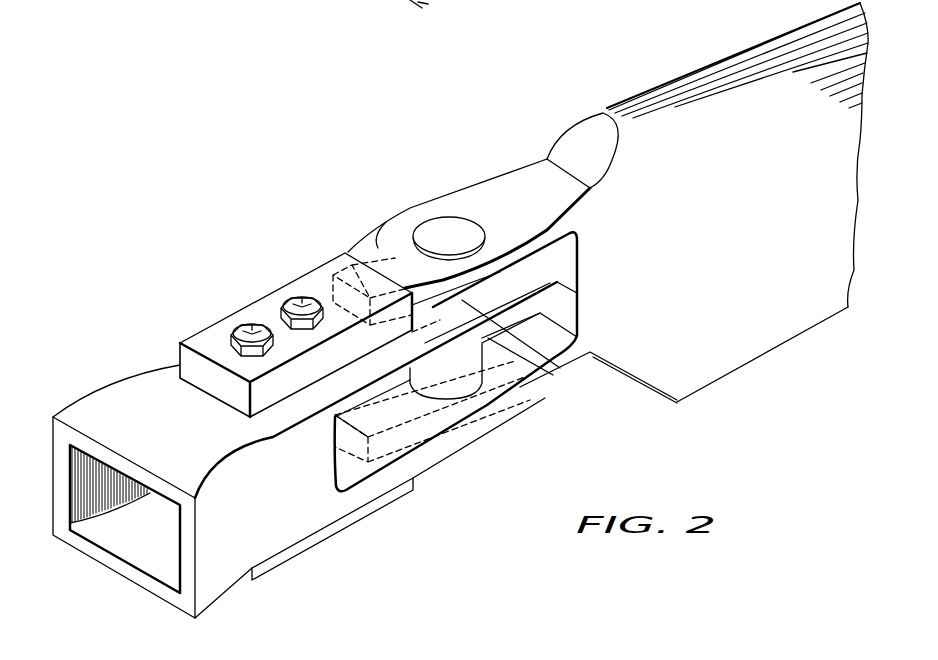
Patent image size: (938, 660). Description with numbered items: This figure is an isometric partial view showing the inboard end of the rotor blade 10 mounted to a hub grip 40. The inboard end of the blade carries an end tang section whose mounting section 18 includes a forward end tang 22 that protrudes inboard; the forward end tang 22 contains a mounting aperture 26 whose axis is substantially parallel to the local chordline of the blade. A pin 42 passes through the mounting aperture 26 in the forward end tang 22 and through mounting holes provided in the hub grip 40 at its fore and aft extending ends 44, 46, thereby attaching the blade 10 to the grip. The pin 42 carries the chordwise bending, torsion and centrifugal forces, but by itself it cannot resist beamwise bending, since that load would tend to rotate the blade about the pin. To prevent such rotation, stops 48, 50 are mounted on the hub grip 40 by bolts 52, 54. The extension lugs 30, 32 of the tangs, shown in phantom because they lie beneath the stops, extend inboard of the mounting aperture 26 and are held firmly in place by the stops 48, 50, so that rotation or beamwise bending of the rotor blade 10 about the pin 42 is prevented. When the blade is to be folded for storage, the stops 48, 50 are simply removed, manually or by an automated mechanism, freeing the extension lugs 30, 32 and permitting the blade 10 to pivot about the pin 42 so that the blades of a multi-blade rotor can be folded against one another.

The rotor blade 10 is at (664, 45).
The mounting section 18 is at (565, 370).
The forward end tang 22 is at (520, 173).
The mounting aperture 26 is at (438, 218).
The extension lug 30 is at (345, 272).
The extension lug 32 is at (410, 452).
The hub grip 40 is at (225, 572).
The pin 42 is at (423, 237).
The fore extending end 44 is at (558, 291).
The aft extending end 46 is at (550, 387).
The stop 48 is at (258, 307).
The stop 50 is at (300, 548).
The bolt 52 is at (232, 323).
The bolt 54 is at (288, 293).